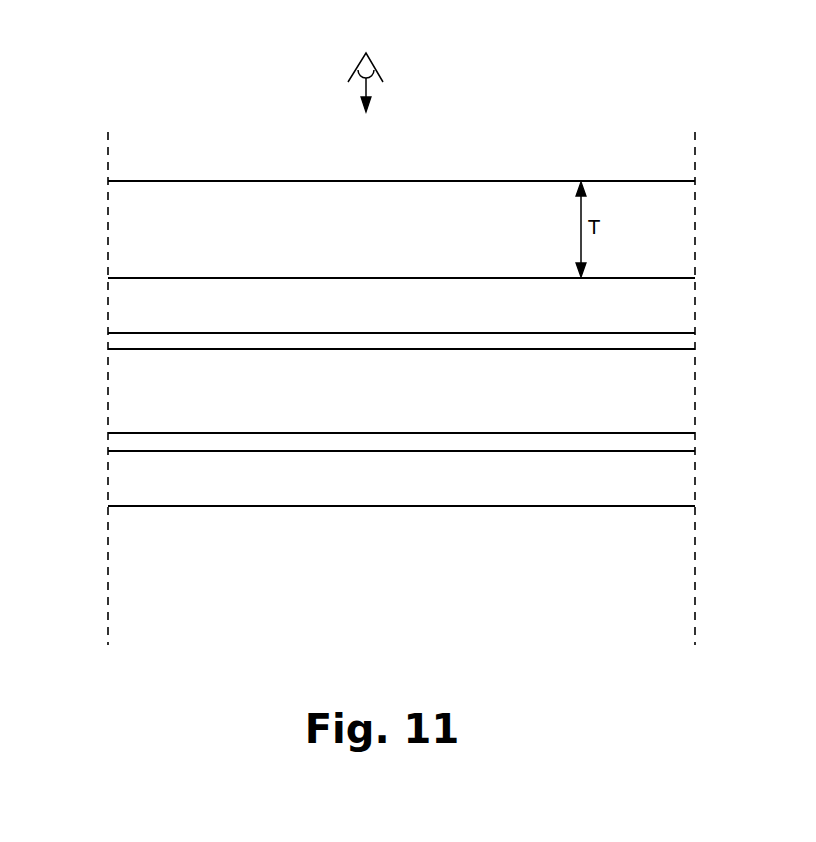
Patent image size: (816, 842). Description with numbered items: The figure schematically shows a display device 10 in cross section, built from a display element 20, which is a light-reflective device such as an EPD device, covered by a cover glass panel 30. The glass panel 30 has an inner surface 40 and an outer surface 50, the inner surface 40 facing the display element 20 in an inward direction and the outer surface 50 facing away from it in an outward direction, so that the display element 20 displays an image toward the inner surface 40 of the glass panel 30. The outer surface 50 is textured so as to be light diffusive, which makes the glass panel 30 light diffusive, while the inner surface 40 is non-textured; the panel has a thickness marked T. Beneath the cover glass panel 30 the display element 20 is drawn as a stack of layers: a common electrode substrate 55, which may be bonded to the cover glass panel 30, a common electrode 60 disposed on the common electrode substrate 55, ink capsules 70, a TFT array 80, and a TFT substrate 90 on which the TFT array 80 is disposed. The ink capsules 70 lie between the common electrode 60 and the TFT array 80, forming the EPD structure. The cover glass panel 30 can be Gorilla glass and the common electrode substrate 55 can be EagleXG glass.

The display device 10 is at (633, 73).
The display element 20 is at (89, 275).
The glass panel 30 is at (251, 194).
The inner surface 40 is at (468, 279).
The outer surface 50 is at (447, 181).
The common electrode substrate 55 is at (197, 317).
The common electrode 60 is at (245, 343).
The ink capsules 70 is at (298, 397).
The TFT array 80 is at (352, 440).
The TFT substrate 90 is at (390, 489).